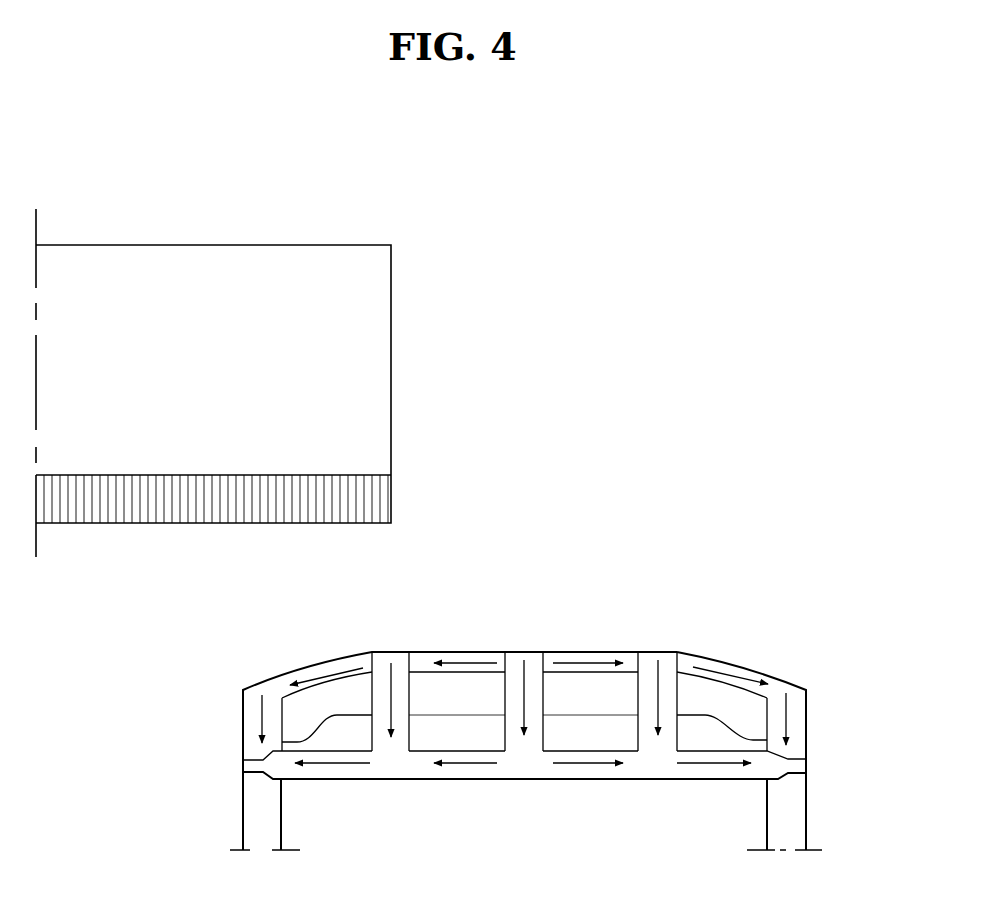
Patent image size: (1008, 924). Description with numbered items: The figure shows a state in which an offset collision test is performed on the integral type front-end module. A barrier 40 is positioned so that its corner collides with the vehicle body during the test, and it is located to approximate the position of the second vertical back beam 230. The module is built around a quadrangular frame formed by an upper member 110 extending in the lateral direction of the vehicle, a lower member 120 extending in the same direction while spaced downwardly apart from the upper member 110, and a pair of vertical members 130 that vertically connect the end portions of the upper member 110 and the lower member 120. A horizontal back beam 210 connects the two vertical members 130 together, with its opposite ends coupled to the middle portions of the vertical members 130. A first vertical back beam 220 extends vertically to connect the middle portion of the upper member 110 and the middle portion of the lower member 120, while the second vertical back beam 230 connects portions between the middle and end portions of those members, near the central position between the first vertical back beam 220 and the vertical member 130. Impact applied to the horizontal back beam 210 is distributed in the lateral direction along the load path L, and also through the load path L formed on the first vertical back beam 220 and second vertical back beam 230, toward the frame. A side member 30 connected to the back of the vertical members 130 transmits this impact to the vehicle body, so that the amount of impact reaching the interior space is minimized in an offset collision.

The barrier 40 is at (363, 378).
The load path L is at (310, 668).
The horizontal back beam 210 is at (326, 662).
The second vertical back beam 230 is at (390, 652).
The first vertical back beam 220 is at (525, 652).
The lower member 120 is at (697, 730).
The vertical member 130 is at (806, 722).
The upper member 110 is at (523, 770).
The side member 30 is at (266, 836).